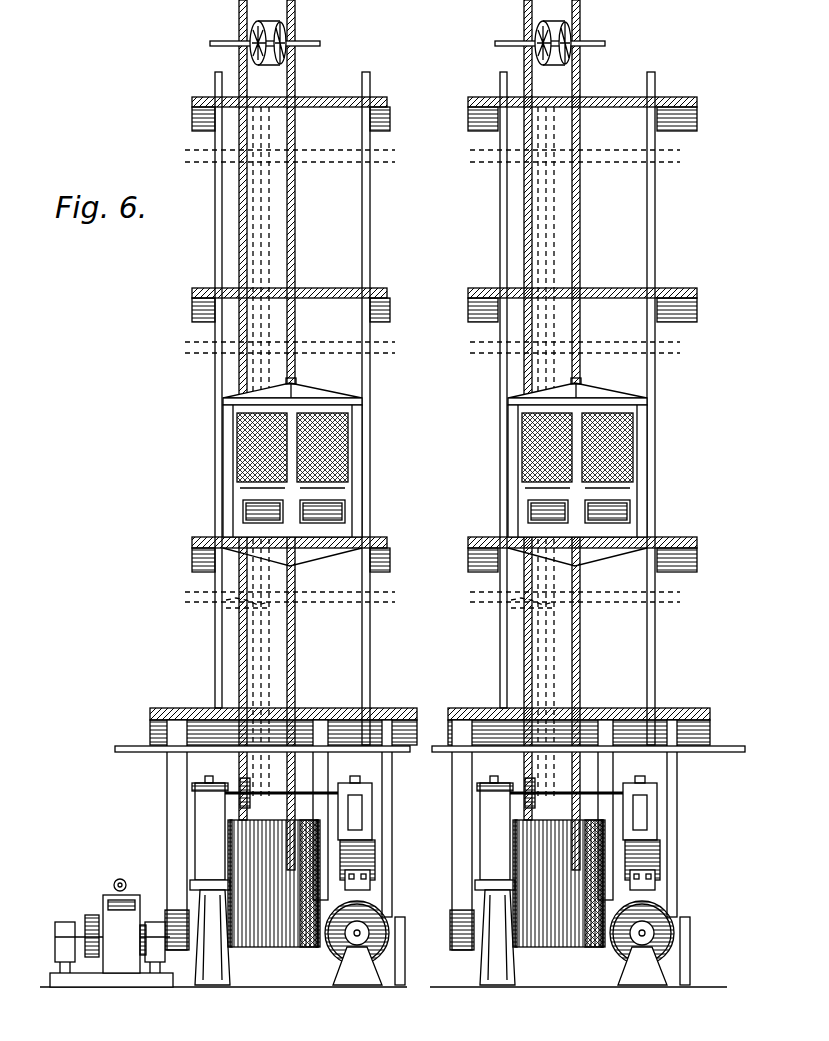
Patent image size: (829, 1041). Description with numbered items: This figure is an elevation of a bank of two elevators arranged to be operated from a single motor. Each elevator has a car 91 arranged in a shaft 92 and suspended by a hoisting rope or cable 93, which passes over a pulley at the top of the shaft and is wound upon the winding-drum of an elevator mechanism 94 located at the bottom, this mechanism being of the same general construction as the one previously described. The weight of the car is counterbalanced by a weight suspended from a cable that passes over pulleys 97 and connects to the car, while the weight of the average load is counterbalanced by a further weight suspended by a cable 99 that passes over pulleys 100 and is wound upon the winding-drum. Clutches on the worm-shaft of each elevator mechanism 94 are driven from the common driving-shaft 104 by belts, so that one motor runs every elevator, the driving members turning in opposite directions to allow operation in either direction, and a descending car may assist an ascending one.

The pulleys 100 is at (238, 31).
The pulleys 97 is at (272, 66).
The hoisting rope or cable 93 is at (295, 242).
The shaft 92 is at (432, 436).
The car 91 is at (335, 490).
The cable 99 is at (527, 651).
The driving-shaft 104 is at (150, 748).
The elevator mechanism 94 is at (276, 935).